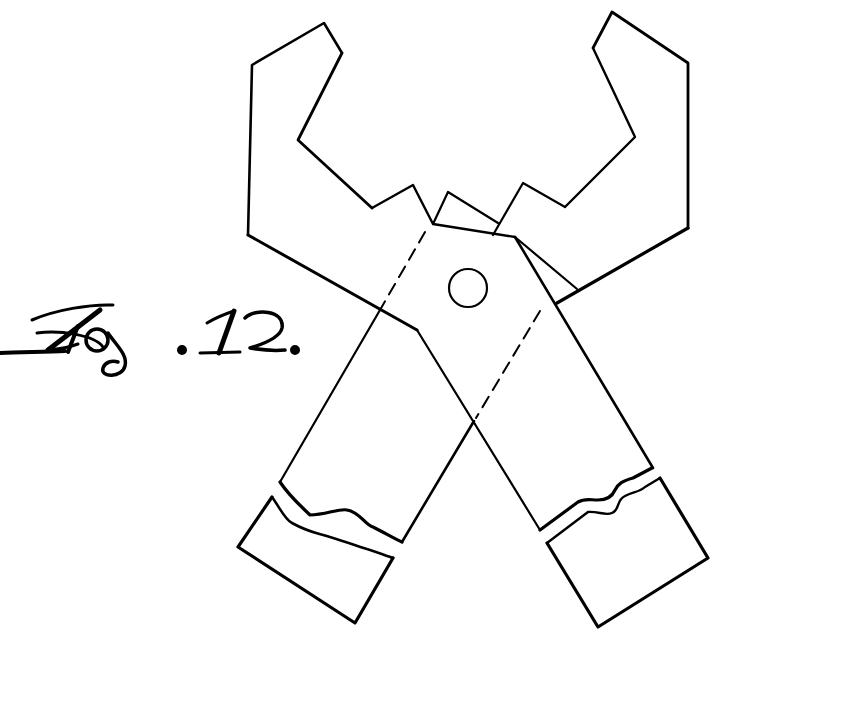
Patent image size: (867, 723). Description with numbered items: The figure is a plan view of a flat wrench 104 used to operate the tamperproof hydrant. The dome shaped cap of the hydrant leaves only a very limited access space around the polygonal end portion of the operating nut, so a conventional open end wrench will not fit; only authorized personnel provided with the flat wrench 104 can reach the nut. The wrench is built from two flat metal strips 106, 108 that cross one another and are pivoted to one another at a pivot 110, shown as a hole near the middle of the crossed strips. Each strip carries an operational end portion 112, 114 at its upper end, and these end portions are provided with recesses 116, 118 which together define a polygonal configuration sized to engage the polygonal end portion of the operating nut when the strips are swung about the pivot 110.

The flat wrench 104 is at (593, 362).
The metal strip 106 is at (628, 423).
The metal strip 108 is at (317, 420).
The pivot 110 is at (468, 307).
The operational end portion 112 is at (689, 135).
The operational end portion 114 is at (248, 162).
The recess 116 is at (615, 106).
The recess 118 is at (315, 105).